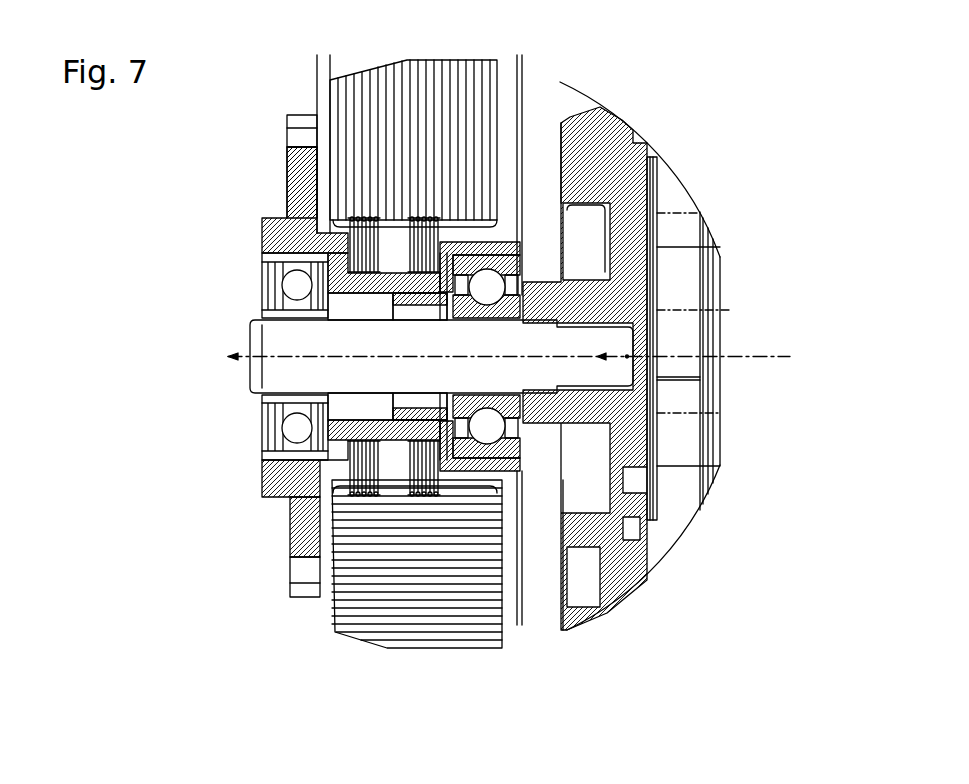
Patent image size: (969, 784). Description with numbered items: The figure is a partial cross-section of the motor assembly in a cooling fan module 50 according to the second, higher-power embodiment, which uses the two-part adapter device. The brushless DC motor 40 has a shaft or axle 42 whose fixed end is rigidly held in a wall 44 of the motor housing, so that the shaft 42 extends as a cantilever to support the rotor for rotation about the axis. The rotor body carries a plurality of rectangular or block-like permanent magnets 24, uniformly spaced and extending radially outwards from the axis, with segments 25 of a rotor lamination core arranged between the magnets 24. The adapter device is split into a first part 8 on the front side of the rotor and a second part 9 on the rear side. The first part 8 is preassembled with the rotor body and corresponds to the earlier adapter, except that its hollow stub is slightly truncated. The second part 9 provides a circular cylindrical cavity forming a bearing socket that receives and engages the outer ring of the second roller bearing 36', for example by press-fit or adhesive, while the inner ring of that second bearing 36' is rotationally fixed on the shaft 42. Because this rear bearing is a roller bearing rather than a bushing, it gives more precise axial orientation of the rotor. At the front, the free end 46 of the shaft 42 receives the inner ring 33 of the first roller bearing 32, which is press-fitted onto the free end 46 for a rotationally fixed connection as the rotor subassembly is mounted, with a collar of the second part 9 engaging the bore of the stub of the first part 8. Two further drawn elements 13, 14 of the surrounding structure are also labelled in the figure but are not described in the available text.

The first part of the adapter device 8 is at (250, 230).
The second part of the adapter device 9 is at (507, 480).
The housing wall 13 is at (287, 181).
The housing flange 14 is at (300, 125).
The permanent magnets 24 is at (415, 73).
The segments of a rotor lamination core 25 is at (443, 216).
The first roller bearing 32 is at (252, 437).
The inner ring of the roller bearing 33 is at (273, 310).
The second roller bearing 36' is at (665, 368).
The motor 40 is at (752, 108).
The shaft or axle 42 is at (452, 389).
The wall of the motor housing 44 is at (630, 433).
The free end of the shaft 46 is at (258, 336).
The cooling fan module 50 is at (263, 529).